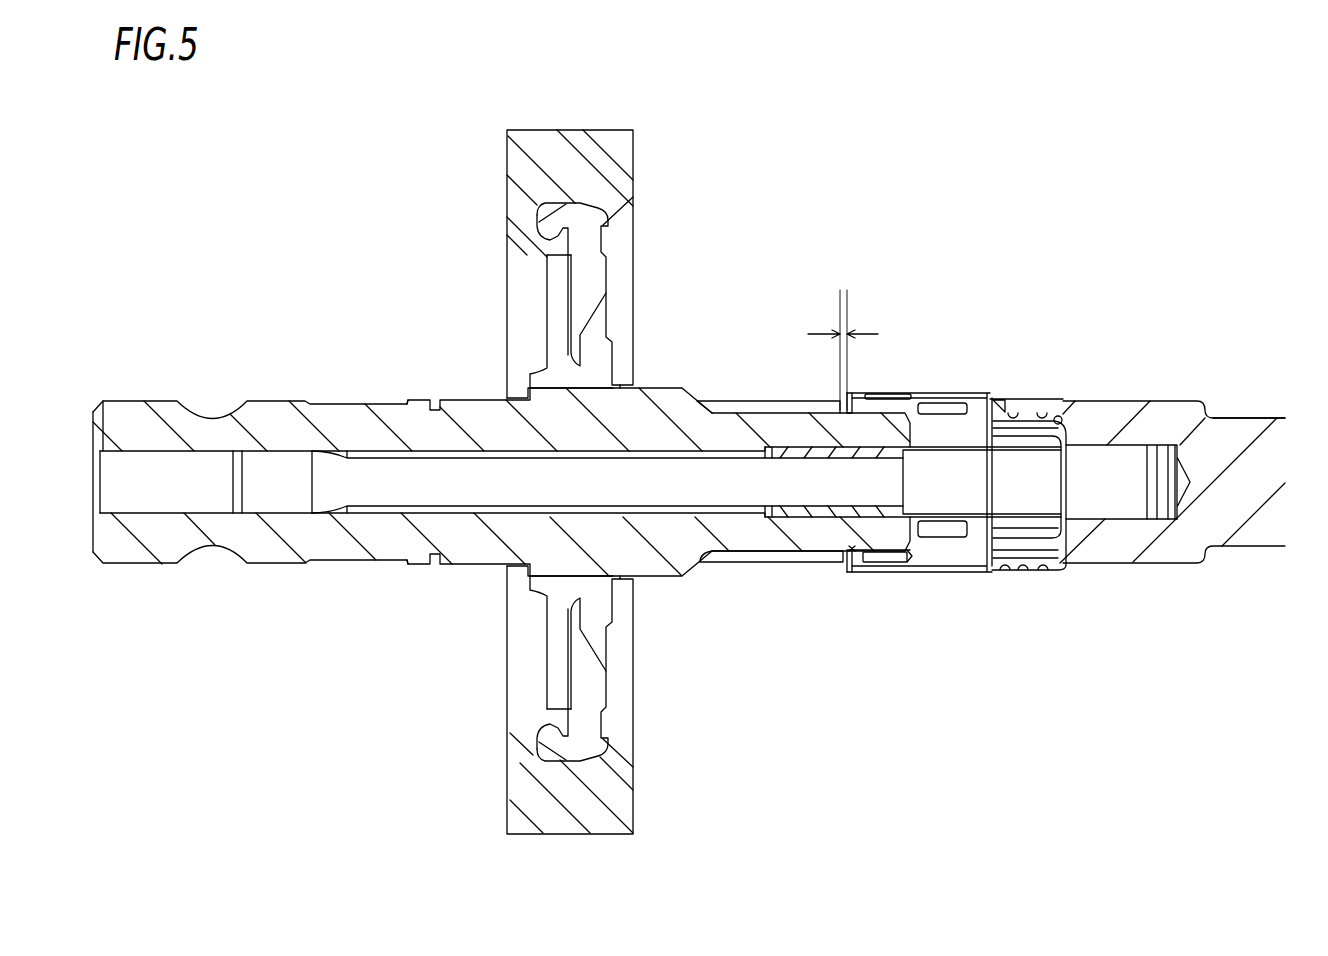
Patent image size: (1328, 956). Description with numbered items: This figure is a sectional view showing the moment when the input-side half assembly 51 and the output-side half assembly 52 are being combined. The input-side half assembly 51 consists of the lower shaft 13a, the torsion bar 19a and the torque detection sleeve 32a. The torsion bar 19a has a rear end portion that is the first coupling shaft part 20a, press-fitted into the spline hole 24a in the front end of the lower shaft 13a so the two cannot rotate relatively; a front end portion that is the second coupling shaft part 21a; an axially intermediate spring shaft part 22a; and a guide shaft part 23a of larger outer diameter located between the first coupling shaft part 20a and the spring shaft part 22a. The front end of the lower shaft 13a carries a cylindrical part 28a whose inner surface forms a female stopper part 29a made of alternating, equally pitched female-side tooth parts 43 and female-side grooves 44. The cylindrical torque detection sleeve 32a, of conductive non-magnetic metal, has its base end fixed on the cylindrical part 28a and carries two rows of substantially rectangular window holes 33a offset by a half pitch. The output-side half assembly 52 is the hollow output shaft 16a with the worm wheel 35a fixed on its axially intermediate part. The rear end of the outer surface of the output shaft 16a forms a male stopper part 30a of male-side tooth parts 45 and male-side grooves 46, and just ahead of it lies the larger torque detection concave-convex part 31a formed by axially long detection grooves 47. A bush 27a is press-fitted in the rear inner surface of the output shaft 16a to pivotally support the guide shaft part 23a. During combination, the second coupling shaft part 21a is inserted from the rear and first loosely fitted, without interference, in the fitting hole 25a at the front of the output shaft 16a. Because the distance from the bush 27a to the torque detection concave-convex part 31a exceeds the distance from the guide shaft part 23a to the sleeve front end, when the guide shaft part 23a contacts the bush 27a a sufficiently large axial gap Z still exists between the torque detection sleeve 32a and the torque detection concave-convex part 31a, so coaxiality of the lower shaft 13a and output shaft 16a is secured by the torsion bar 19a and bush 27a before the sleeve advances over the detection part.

The lower shaft 13a is at (1228, 550).
The output shaft 16a is at (333, 417).
The torsion bar 19a is at (388, 490).
The first coupling shaft part 20a is at (1118, 467).
The second coupling shaft part 21a is at (265, 468).
The spring shaft part 22a is at (468, 492).
The guide shaft part 23a is at (1007, 488).
The spline hole 24a is at (1125, 530).
The fitting hole 25a is at (290, 506).
The bush 27a is at (812, 514).
The cylindrical part 28a is at (1038, 402).
The female stopper part 29a is at (1018, 405).
The male stopper part 30a is at (877, 562).
The torque detection concave-convex part 31a is at (733, 411).
The torque detection sleeve 32a is at (940, 392).
The window holes 33a is at (962, 540).
The worm wheel 35a is at (555, 145).
The female-side tooth parts 43 is at (1045, 413).
The female-side grooves 44 is at (1057, 423).
The male-side tooth parts 45 is at (905, 572).
The male-side grooves 46 is at (858, 565).
The detection grooves 47 is at (722, 404).
The input-side half assembly 51 is at (1227, 406).
The output-side half assembly 52 is at (415, 377).
The axial gap Z is at (832, 286).